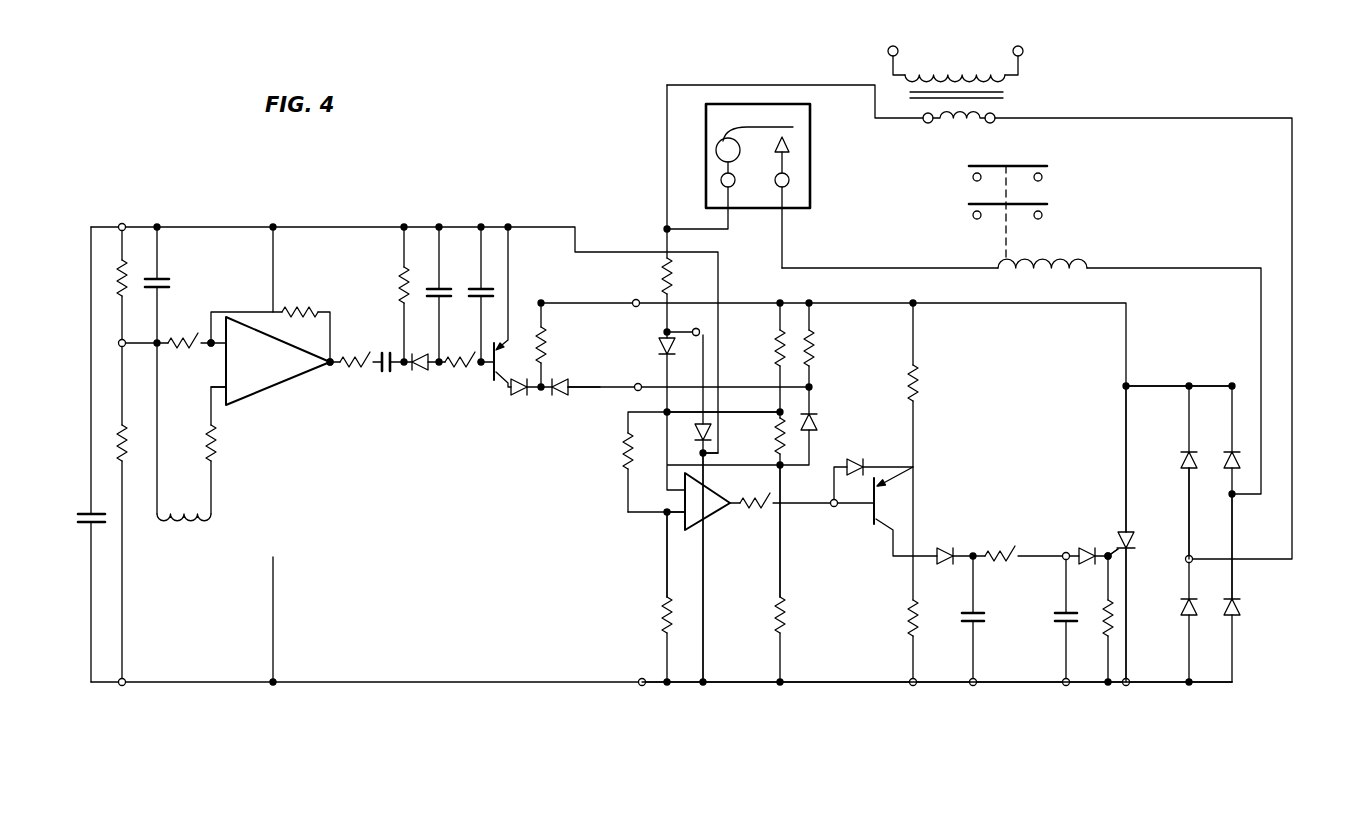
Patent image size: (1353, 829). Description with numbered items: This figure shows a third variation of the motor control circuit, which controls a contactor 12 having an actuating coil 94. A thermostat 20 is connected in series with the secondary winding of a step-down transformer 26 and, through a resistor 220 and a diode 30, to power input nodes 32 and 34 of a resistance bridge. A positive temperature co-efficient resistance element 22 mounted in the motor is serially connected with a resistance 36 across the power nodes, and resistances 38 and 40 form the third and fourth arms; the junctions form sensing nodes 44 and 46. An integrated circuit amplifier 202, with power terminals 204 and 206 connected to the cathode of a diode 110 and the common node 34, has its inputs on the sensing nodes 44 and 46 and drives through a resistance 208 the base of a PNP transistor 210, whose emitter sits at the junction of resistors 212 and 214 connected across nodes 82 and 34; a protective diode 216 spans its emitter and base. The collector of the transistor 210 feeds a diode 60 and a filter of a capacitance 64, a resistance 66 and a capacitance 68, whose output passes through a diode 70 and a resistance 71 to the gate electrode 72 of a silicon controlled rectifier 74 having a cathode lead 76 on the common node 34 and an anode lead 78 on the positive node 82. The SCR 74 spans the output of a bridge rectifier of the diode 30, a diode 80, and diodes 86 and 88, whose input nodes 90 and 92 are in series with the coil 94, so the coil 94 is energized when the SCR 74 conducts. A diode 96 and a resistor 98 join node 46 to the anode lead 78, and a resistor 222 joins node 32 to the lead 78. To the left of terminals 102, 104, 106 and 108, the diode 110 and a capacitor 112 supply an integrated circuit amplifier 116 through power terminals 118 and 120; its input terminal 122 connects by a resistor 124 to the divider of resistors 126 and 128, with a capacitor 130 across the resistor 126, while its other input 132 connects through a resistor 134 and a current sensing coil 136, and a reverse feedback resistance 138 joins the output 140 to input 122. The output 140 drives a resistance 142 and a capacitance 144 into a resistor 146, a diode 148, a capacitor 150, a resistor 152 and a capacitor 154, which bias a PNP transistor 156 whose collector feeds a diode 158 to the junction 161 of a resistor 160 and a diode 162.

The contactor 12 is at (1055, 186).
The thermostat 20 is at (812, 165).
The positive temperature co-efficient resistance element 22 is at (625, 452).
The step-down voltage transformer 26 is at (998, 102).
The diode 30 is at (1180, 605).
The power input node 32 is at (743, 410).
The common node 34 is at (733, 685).
The resistance 36 is at (662, 613).
The resistance 38 is at (783, 437).
The resistance 40 is at (786, 613).
The sensing node 44 is at (667, 538).
The sensing node 46 is at (782, 553).
The diode 60 is at (942, 547).
The capacitance 64 is at (975, 622).
The resistance 66 is at (1000, 547).
The capacitance 68 is at (1060, 607).
The diode 70 is at (1083, 545).
The resistance 71 is at (1103, 617).
The gate electrode 72 is at (1107, 550).
The silicon controlled rectifier 74 is at (1135, 540).
The cathode lead 76 is at (1127, 580).
The anode lead 78 is at (1126, 455).
The diode 80 is at (1180, 457).
The positive node 82 is at (1158, 386).
The diode 86 is at (1242, 603).
The diode 88 is at (1242, 458).
The input node 90 is at (1189, 510).
The input node 92 is at (1235, 520).
The actuating coil 94 is at (1050, 258).
The diode 96 is at (820, 422).
The resistor 98 is at (816, 347).
The terminal 102 is at (700, 330).
The terminal 104 is at (636, 299).
The terminal 106 is at (637, 383).
The terminal 108 is at (640, 678).
The diode 110 is at (694, 432).
The capacitor 112 is at (84, 520).
The integrated circuit amplifier 116 is at (294, 378).
The power terminal 118 is at (273, 262).
The power terminal 120 is at (273, 508).
The input terminal 122 is at (212, 340).
The resistor 124 is at (178, 348).
The resistor 126 is at (118, 276).
The resistor 128 is at (118, 438).
The capacitor 130 is at (160, 278).
The input 132 is at (213, 420).
The resistor 134 is at (218, 452).
The current sensing coil 136 is at (186, 526).
The reverse feedback resistance 138 is at (300, 307).
The output 140 is at (333, 360).
The resistance 142 is at (353, 368).
The capacitance 144 is at (385, 371).
The resistor 146 is at (403, 275).
The diode 148 is at (420, 371).
The capacitor 150 is at (442, 288).
The resistor 152 is at (459, 371).
The capacitor 154 is at (492, 282).
The PNP transistor 156 is at (497, 380).
The diode 158 is at (517, 396).
The resistor 160 is at (547, 348).
The junction 161 is at (553, 396).
The diode 162 is at (565, 395).
The integrated circuit amplifier 202 is at (708, 513).
The power terminal 204 is at (704, 477).
The power terminal 206 is at (703, 595).
The resistance 208 is at (774, 501).
The PNP transistor 210 is at (887, 497).
The resistor 212 is at (917, 388).
The resistor 214 is at (910, 610).
The protective diode 216 is at (852, 478).
The resistor 220 is at (667, 265).
The resistor 222 is at (782, 345).